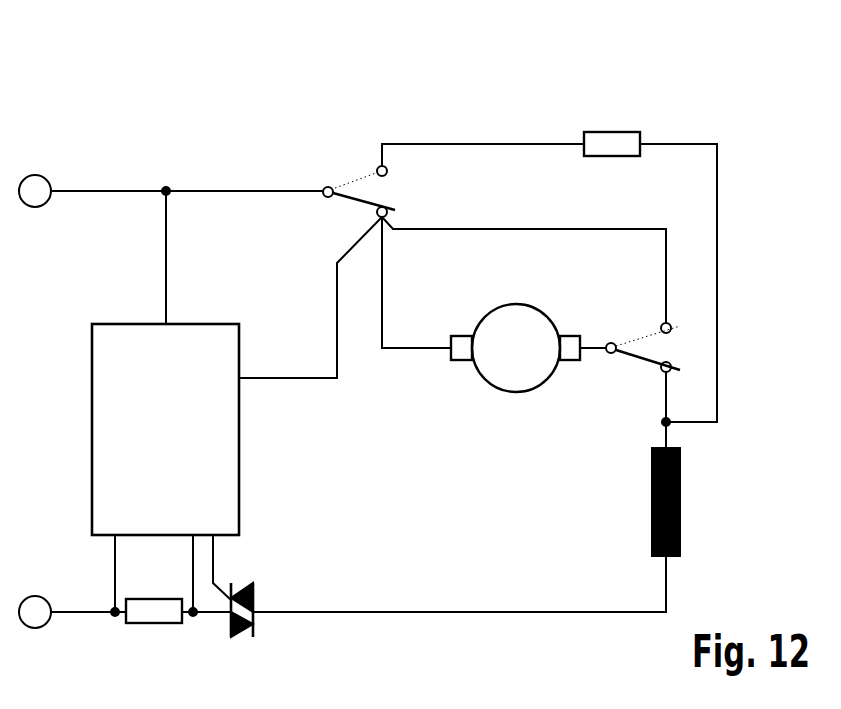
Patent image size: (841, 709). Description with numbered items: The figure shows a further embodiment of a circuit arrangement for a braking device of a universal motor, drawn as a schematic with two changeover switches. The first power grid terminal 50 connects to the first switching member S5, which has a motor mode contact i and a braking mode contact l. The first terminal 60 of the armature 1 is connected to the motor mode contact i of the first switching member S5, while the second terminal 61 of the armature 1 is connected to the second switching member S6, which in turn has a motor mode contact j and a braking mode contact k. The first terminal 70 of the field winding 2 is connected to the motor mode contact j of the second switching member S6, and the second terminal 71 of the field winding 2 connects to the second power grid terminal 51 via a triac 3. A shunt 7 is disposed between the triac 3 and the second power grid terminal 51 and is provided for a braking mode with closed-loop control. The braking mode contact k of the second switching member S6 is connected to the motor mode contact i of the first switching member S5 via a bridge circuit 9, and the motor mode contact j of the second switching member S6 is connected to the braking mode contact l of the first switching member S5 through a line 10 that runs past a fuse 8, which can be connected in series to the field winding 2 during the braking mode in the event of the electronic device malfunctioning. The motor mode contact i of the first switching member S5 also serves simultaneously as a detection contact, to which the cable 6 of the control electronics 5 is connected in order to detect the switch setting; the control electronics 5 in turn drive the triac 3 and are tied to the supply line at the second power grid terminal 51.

The armature 1 is at (517, 303).
The field winding 2 is at (652, 503).
The triac 3 is at (245, 637).
The control electronics 5 is at (92, 428).
The cable 6 is at (337, 278).
The shunt 7 is at (153, 623).
The fuse 8 is at (612, 132).
The bridge circuit 9 is at (530, 229).
The connecting line 10 is at (718, 283).
The first power grid terminal 50 is at (35, 175).
The second power grid terminal 51 is at (35, 596).
The first terminal of the armature 60 is at (428, 347).
The motor brush 61 is at (592, 347).
The first terminal of the field winding 70 is at (668, 441).
The second terminal of the field winding 71 is at (668, 575).
The first switching member S5 is at (327, 186).
The second switching member S6 is at (608, 354).
The braking mode contact l is at (380, 165).
The motor mode contact i is at (390, 212).
The braking mode contact k is at (663, 322).
The motor mode contact j is at (660, 372).